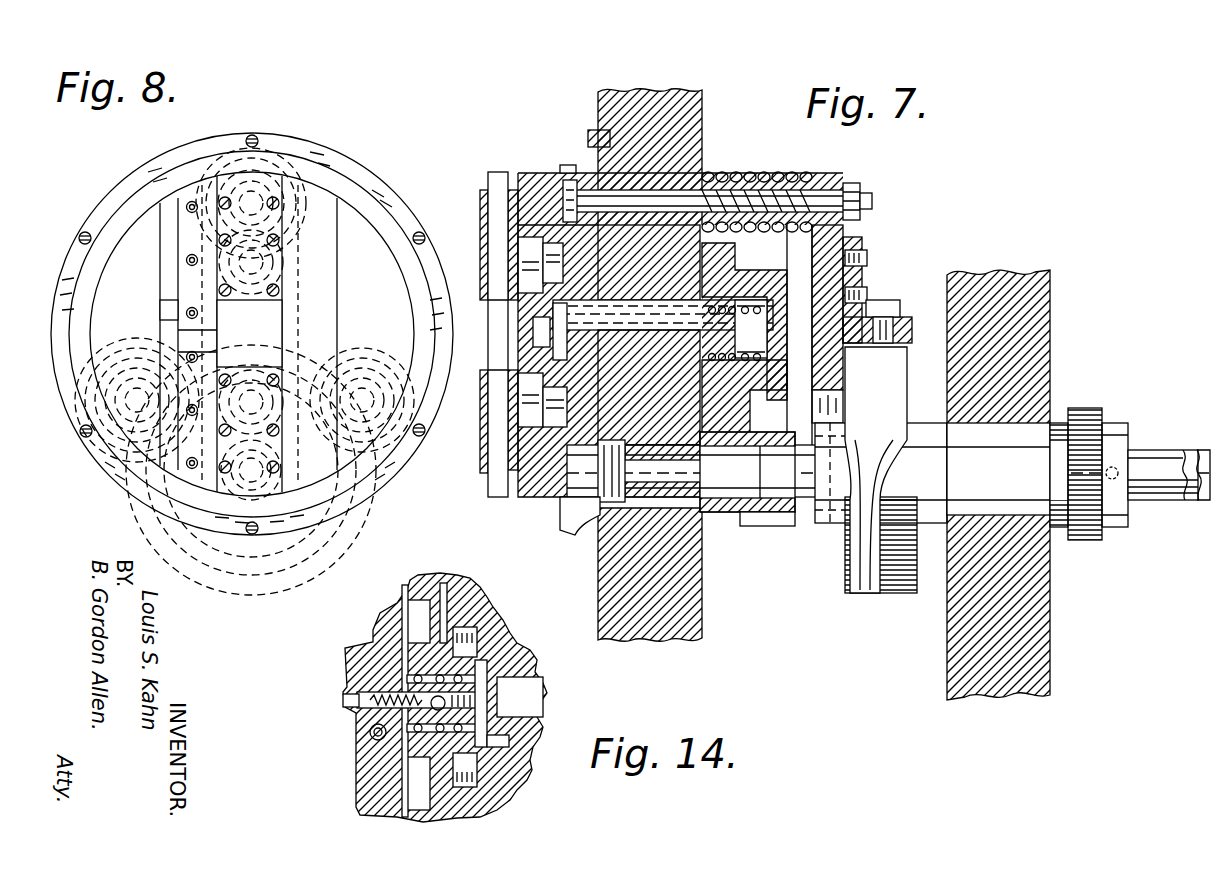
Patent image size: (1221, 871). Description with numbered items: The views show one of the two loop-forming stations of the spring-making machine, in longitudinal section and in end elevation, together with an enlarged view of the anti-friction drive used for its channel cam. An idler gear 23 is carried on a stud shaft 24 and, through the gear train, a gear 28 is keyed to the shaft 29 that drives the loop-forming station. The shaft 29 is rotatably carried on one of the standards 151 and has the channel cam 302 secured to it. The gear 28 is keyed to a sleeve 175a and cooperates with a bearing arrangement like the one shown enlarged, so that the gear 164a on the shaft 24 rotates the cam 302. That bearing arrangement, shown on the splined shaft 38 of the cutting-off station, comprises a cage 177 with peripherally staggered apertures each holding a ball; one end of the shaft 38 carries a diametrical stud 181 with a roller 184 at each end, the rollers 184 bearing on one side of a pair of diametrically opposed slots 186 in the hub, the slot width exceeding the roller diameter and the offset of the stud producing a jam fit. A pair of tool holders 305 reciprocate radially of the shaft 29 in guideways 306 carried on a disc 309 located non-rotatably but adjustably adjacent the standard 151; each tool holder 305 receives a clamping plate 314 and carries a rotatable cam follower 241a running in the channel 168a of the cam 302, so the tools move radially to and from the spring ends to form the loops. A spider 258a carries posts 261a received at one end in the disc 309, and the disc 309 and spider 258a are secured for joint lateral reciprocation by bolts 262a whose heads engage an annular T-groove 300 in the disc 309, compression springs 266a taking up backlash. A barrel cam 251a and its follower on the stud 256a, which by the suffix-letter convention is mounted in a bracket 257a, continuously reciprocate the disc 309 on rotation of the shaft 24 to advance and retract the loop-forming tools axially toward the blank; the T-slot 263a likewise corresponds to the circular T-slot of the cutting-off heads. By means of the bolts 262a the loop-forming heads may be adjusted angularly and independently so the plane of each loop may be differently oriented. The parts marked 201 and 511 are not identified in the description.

In FIG. 7, the idler gear 23 is at (1085, 408).
In FIG. 7, the stud shaft 24 is at (1170, 502).
In FIG. 7, the gear 28 is at (735, 415).
In FIG. 7, the shaft 29 is at (655, 355).
In FIG. 14, the splined shaft 38 is at (610, 435).
In FIG. 7, the standard 151 is at (702, 588).
In FIG. 7, the gear 164a is at (760, 526).
In FIG. 8, the channel 168a is at (132, 308).
In FIG. 7, the sleeve 175a is at (730, 300).
In FIG. 14, the cage 177 is at (400, 745).
In FIG. 14, the diametrical stud 181 is at (490, 712).
In FIG. 14, the roller 184 is at (512, 741).
In FIG. 14, the slots 186 is at (480, 645).
In FIG. 14, the spring plunger 201 is at (350, 717).
In FIG. 8, the cam follower 241a is at (338, 294).
In FIG. 7, the cam follower 241a is at (560, 253).
In FIG. 7, the barrel cam 251a is at (850, 588).
In FIG. 7, the stud 256a is at (884, 332).
In FIG. 7, the bracket 257a is at (866, 280).
In FIG. 8, the spider 258a is at (125, 330).
In FIG. 7, the spider 258a is at (848, 176).
In FIG. 7, the posts 261a is at (770, 188).
In FIG. 7, the bolts 262a is at (872, 200).
In FIG. 7, the T-slot 263a is at (562, 505).
In FIG. 7, the compression springs 266a is at (732, 172).
In FIG. 8, the annular T-groove 300 is at (128, 250).
In FIG. 7, the annular T-groove 300 is at (548, 180).
In FIG. 7, the channel cam 302 is at (622, 286).
In FIG. 8, the tool holders 305 is at (285, 222).
In FIG. 7, the tool holders 305 is at (484, 200).
In FIG. 8, the guideways 306 is at (192, 202).
In FIG. 7, the guideways 306 is at (560, 170).
In FIG. 7, the disc 309 is at (560, 168).
In FIG. 8, the clamping plate 314 is at (452, 296).
In FIG. 7, the clamping plate 314 is at (484, 295).
In FIG. 7, the frame wall 511 is at (1040, 616).